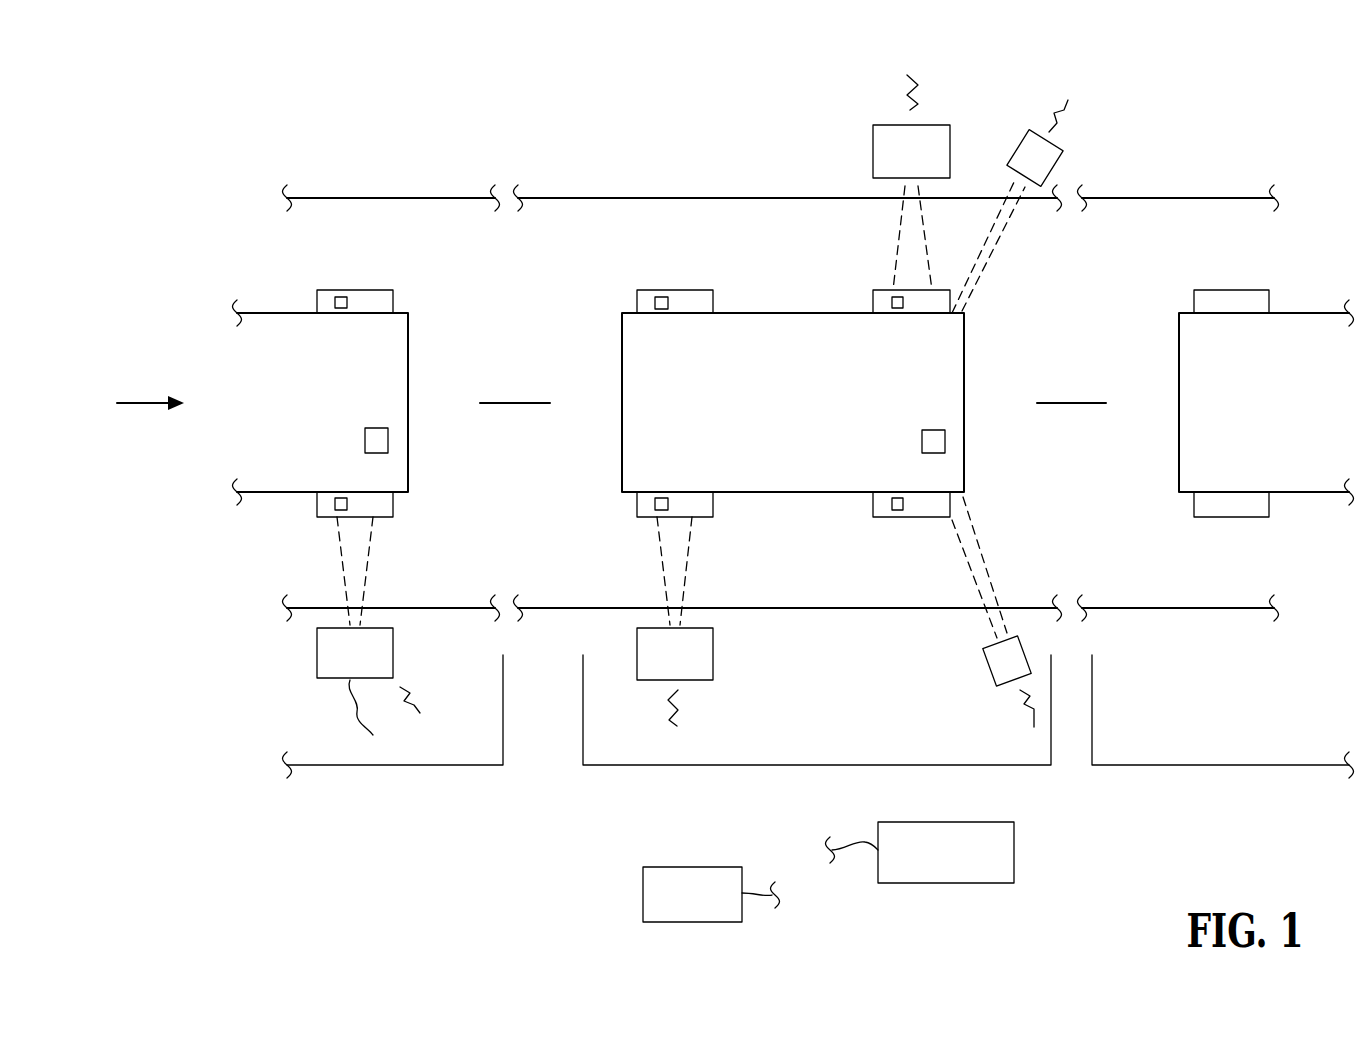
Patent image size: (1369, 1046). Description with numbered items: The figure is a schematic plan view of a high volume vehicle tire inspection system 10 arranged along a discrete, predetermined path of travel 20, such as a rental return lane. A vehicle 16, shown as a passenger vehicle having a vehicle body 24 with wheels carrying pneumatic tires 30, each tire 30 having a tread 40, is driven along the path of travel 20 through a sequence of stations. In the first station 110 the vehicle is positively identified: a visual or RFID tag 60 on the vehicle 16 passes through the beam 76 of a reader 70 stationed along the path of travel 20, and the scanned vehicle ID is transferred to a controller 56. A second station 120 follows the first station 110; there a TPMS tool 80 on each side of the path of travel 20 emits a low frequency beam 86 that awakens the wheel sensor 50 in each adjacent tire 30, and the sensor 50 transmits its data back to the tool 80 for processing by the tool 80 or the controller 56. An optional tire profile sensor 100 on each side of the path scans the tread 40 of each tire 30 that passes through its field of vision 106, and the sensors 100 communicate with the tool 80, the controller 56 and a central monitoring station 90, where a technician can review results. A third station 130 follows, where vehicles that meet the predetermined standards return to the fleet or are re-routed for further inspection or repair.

The vehicle tire inspection system 10 is at (633, 145).
The vehicle 16 is at (277, 303).
The path of travel 20 is at (118, 403).
The vehicle body 24 is at (270, 413).
The pneumatic tire 30 is at (302, 504).
The tread 40 is at (394, 500).
The wheel sensor 50 is at (340, 297).
The controller 56 is at (1014, 848).
The tag 60 is at (375, 428).
The reader 70 is at (343, 668).
The beam 76 is at (368, 563).
The TPMS tool 80 is at (899, 168).
The beam 86 is at (900, 225).
The central monitoring station 90 is at (643, 890).
The tire profile sensor 100 is at (1060, 165).
The field of vision 106 is at (984, 566).
The first station 110 is at (395, 765).
The second station 120 is at (785, 765).
The third station 130 is at (1219, 765).